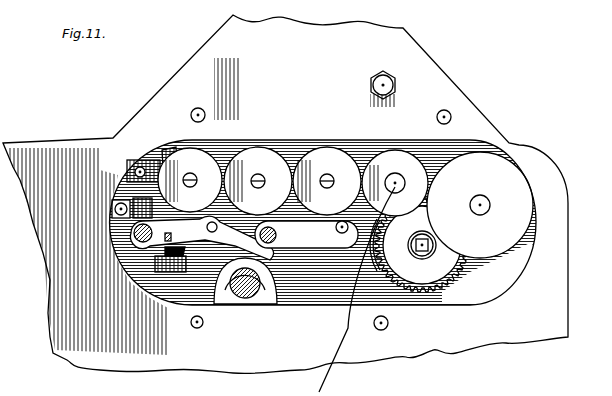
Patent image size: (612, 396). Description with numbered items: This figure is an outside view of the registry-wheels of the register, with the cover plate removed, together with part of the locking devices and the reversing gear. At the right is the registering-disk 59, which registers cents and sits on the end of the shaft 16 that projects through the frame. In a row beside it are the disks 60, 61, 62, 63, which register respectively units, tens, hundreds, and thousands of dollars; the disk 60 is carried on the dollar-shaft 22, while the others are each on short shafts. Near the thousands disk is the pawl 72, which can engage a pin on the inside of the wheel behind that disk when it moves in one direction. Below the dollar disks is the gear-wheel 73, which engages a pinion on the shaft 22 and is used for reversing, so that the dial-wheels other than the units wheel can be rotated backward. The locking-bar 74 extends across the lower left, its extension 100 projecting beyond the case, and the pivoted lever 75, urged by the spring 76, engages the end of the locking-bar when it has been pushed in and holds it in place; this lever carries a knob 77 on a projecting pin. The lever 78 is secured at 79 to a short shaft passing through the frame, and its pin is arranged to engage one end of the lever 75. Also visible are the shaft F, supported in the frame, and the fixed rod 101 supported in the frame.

The shaft 16 is at (481, 208).
The dollar-shaft 22 is at (354, 291).
The registering-disk 59 is at (480, 205).
The disk 60 is at (398, 158).
The disk 61 is at (337, 157).
The disk 62 is at (263, 158).
The disk 63 is at (200, 157).
The pawl 72 is at (141, 166).
The gear-wheel 73 is at (419, 245).
The locking-bar 74 is at (138, 200).
The pivoted lever 75 is at (201, 238).
The spring 76 is at (158, 262).
The knob 77 is at (135, 237).
The lever 78 is at (285, 239).
The securing point of lever 79 is at (341, 233).
The extension 100 is at (109, 204).
The fixed rod 101 is at (398, 88).
The shaft F is at (240, 298).